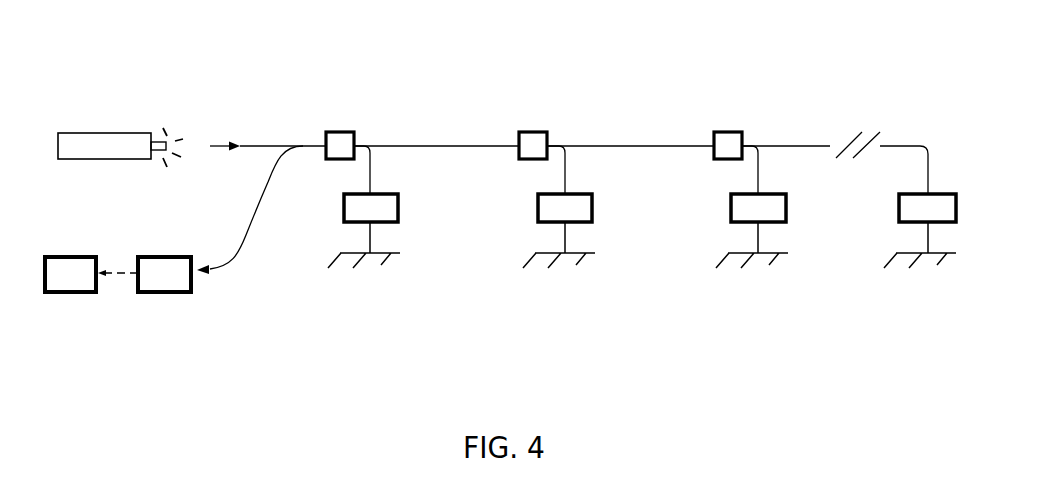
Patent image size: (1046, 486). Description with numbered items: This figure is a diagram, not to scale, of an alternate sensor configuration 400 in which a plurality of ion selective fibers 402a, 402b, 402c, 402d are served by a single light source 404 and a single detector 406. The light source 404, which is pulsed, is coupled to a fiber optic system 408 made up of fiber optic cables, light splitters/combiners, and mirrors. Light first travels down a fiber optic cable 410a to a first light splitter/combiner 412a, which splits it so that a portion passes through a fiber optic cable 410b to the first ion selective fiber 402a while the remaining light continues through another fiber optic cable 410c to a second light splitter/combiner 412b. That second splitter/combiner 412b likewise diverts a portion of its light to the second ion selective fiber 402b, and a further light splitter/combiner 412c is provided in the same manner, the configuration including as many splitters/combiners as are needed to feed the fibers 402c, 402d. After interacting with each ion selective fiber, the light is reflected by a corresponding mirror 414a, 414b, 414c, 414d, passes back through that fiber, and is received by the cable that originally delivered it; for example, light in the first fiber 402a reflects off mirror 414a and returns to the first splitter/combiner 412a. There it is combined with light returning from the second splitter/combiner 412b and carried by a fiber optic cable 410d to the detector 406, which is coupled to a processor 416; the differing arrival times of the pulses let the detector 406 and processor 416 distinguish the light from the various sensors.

The sensor configuration 400 is at (144, 53).
The ion selective fiber 402a is at (344, 205).
The ion selective fiber 402b is at (538, 205).
The ion selective fiber 402c is at (731, 205).
The ion selective fiber 402d is at (899, 205).
The light source 404 is at (80, 133).
The detector 406 is at (163, 255).
The fiber optic system 408 is at (241, 167).
The fiber optic cable 410a is at (257, 146).
The fiber optic cable 410b is at (371, 170).
The fiber optic cable 410c is at (458, 146).
The fiber optic cable 410d is at (242, 234).
The light splitter/combiner 412a is at (343, 131).
The light splitter/combiner 412b is at (538, 131).
The light splitter/combiner 412c is at (732, 131).
The mirror 414a is at (381, 265).
The mirror 414b is at (576, 265).
The mirror 414c is at (769, 265).
The mirror 414d is at (937, 265).
The processor 416 is at (68, 296).